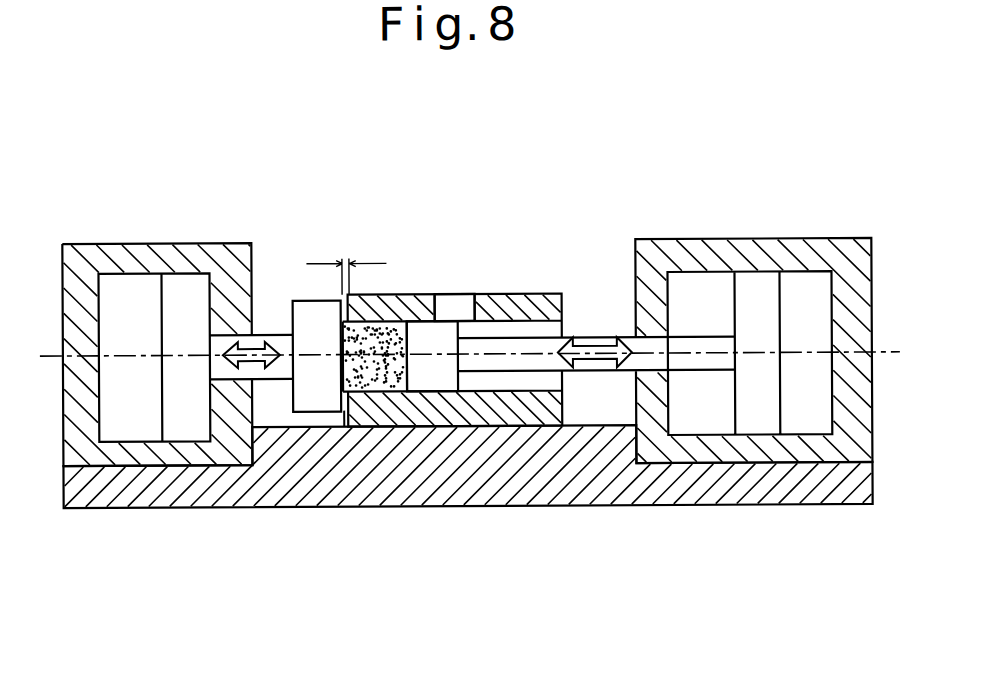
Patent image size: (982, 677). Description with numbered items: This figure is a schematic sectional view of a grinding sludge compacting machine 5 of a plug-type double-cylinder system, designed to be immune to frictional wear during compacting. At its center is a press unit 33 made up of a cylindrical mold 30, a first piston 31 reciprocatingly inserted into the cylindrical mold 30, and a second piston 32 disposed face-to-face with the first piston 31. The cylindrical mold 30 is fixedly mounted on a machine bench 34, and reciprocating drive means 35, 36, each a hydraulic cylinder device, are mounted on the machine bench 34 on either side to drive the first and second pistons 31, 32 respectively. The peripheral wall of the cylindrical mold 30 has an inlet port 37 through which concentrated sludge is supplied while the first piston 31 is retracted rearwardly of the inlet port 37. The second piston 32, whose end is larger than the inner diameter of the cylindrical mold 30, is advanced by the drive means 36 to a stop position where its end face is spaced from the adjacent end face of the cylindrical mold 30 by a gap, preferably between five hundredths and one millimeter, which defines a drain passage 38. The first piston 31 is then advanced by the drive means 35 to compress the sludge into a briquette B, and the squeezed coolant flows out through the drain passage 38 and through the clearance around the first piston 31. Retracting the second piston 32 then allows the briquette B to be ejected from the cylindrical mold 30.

The grinding sludge compacting machine 5 is at (599, 192).
The cylindrical mold 30 is at (432, 410).
The first piston 31 is at (443, 337).
The second piston 32 is at (307, 313).
The press unit 33 is at (412, 262).
The machine bench 34 is at (615, 483).
The reciprocating drive means 35 is at (720, 256).
The reciprocating drive means 36 is at (147, 249).
The inlet port 37 is at (460, 304).
The drain passage 38 is at (342, 417).
The briquette B is at (405, 322).